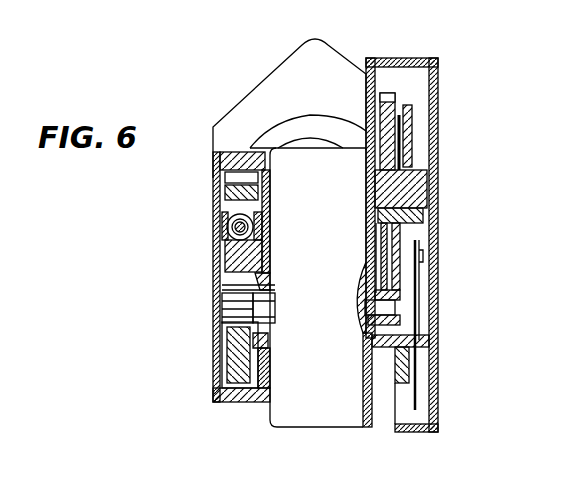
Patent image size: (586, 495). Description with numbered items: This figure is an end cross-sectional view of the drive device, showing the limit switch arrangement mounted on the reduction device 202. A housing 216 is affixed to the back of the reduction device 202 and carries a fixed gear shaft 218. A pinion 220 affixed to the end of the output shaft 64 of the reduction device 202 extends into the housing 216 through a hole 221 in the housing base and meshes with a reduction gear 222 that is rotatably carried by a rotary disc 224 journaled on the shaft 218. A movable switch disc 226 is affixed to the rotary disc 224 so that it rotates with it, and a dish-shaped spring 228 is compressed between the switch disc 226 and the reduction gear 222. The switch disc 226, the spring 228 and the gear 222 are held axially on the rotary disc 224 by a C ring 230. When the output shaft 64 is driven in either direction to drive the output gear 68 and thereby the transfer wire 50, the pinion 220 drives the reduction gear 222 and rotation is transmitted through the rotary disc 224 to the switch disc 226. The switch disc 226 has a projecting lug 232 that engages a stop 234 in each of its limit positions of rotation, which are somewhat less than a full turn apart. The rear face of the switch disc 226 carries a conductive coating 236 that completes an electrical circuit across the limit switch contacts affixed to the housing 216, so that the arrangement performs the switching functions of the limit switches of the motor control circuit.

The transfer wire 50 is at (228, 230).
The output shaft 64 is at (222, 308).
The output gear 68 is at (223, 358).
The reduction device 202 is at (261, 420).
The housing 216 is at (368, 180).
The fixed gear shaft 218 is at (425, 197).
The pinion 220 is at (428, 323).
The hole 221 is at (360, 332).
The reduction gear 222 is at (428, 58).
The rotary disc 224 is at (385, 137).
The movable switch disc 226 is at (392, 91).
The dish-shaped spring 228 is at (418, 267).
The C ring 230 is at (392, 178).
The projecting lug 232 is at (415, 300).
The stop 234 is at (415, 340).
The conductive coating 236 is at (407, 106).